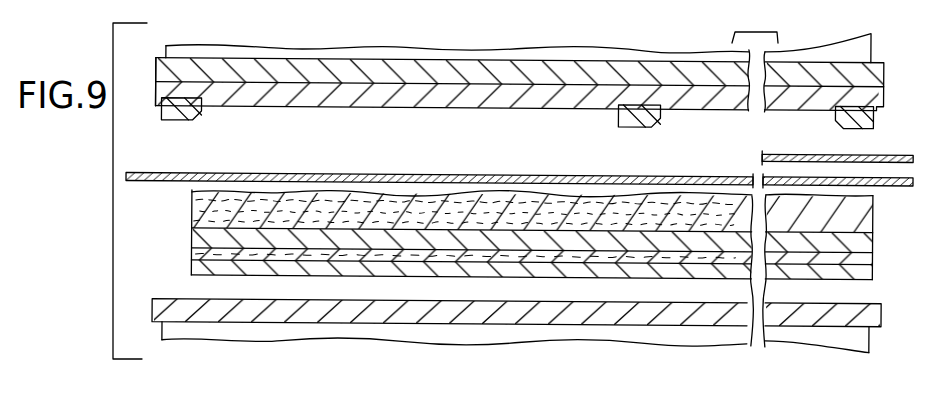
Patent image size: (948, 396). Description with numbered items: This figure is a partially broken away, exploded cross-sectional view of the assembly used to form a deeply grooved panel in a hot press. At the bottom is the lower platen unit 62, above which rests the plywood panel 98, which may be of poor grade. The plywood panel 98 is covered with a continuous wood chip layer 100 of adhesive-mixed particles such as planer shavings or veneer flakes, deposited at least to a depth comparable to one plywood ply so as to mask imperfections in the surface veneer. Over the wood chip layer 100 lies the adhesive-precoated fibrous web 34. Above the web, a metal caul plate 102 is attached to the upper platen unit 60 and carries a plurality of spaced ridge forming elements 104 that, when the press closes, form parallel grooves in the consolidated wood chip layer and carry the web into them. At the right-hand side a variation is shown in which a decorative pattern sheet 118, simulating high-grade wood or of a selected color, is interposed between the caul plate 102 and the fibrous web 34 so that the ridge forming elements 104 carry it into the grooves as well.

The upper platen unit 60 is at (490, 50).
The lower platen unit 62 is at (408, 333).
The fibrous web 34 is at (172, 183).
The plywood panel 98 is at (192, 255).
The wood chip layer 100 is at (192, 222).
The caul plate 102 is at (155, 88).
The ridge forming elements 104 is at (185, 120).
The decorative pattern sheet 118 is at (880, 155).